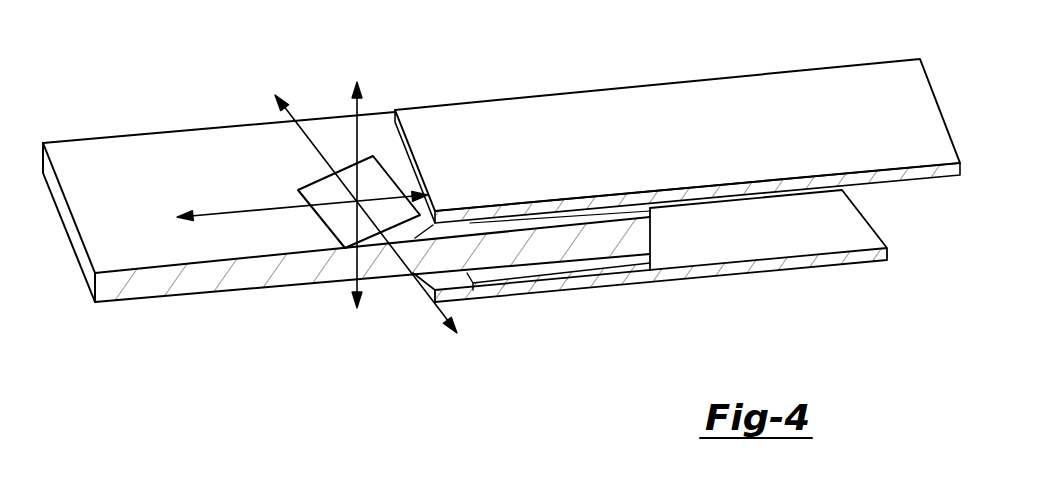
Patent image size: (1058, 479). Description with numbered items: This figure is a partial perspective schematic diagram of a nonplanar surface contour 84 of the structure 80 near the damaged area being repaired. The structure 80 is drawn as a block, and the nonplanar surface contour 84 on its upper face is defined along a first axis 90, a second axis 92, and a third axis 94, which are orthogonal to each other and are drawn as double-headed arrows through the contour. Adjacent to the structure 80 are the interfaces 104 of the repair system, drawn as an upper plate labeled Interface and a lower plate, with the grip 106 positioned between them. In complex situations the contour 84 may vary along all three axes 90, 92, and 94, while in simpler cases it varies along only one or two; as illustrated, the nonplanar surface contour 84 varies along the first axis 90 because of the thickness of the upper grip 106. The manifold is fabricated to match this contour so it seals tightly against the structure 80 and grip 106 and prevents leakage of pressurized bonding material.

The structure 80 is at (133, 132).
The nonplanar surface contour 84 is at (323, 223).
The first axis 90 is at (287, 212).
The second axis 92 is at (377, 227).
The third axis 94 is at (358, 179).
The interface 104 is at (787, 70).
The grip 106 is at (650, 253).